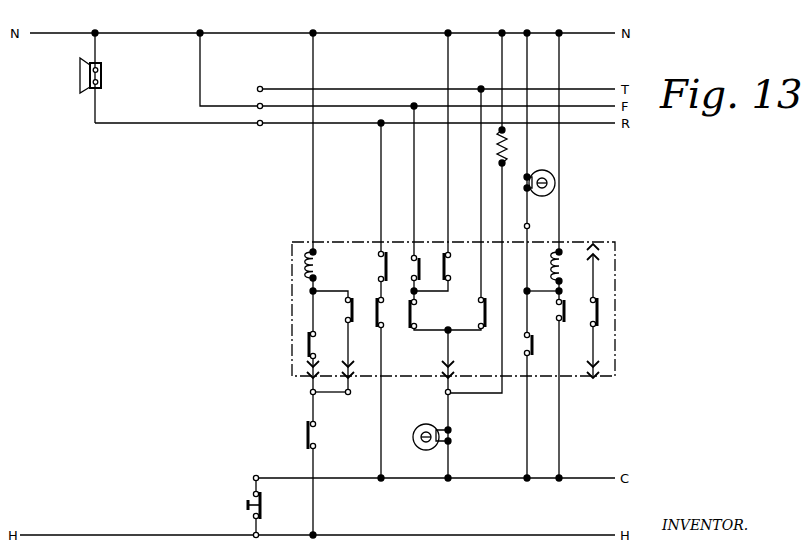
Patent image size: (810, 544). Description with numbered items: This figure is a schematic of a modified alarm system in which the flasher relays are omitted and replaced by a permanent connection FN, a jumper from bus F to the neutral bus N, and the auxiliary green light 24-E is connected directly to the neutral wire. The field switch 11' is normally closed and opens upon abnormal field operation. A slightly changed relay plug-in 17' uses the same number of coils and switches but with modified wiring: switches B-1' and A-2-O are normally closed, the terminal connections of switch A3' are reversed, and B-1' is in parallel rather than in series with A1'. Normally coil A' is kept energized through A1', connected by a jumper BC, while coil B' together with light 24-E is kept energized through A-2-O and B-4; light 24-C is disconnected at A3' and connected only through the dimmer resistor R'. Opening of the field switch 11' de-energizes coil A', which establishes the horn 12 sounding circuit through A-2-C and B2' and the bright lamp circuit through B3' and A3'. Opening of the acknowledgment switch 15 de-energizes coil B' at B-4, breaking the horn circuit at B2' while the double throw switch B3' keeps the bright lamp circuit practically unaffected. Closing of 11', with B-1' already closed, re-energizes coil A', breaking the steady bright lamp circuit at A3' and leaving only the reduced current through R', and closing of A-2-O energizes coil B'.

The horn 12 is at (79, 73).
The acknowledgment switch 15 is at (246, 505).
The field switch 11' is at (294, 466).
The relay plug-in 17' is at (459, 294).
The auxiliary (green) light 24-E is at (548, 174).
The light 24-C is at (436, 424).
The dimmer resistor R' is at (487, 213).
The permanent connection F-N FN is at (199, 75).
The jumper B-C BC is at (324, 393).
The coil A' is at (319, 163).
The coil B' is at (553, 163).
The switch B2' is at (367, 210).
The double throw switch B3' is at (431, 163).
The switch A1' is at (333, 341).
The switch B-1' is at (324, 341).
The switch A-2-C' A-2-C is at (376, 316).
The switch A3' is at (447, 239).
The switch A-2-0' A-2-O is at (557, 310).
The switch B-4' B-4 is at (534, 345).